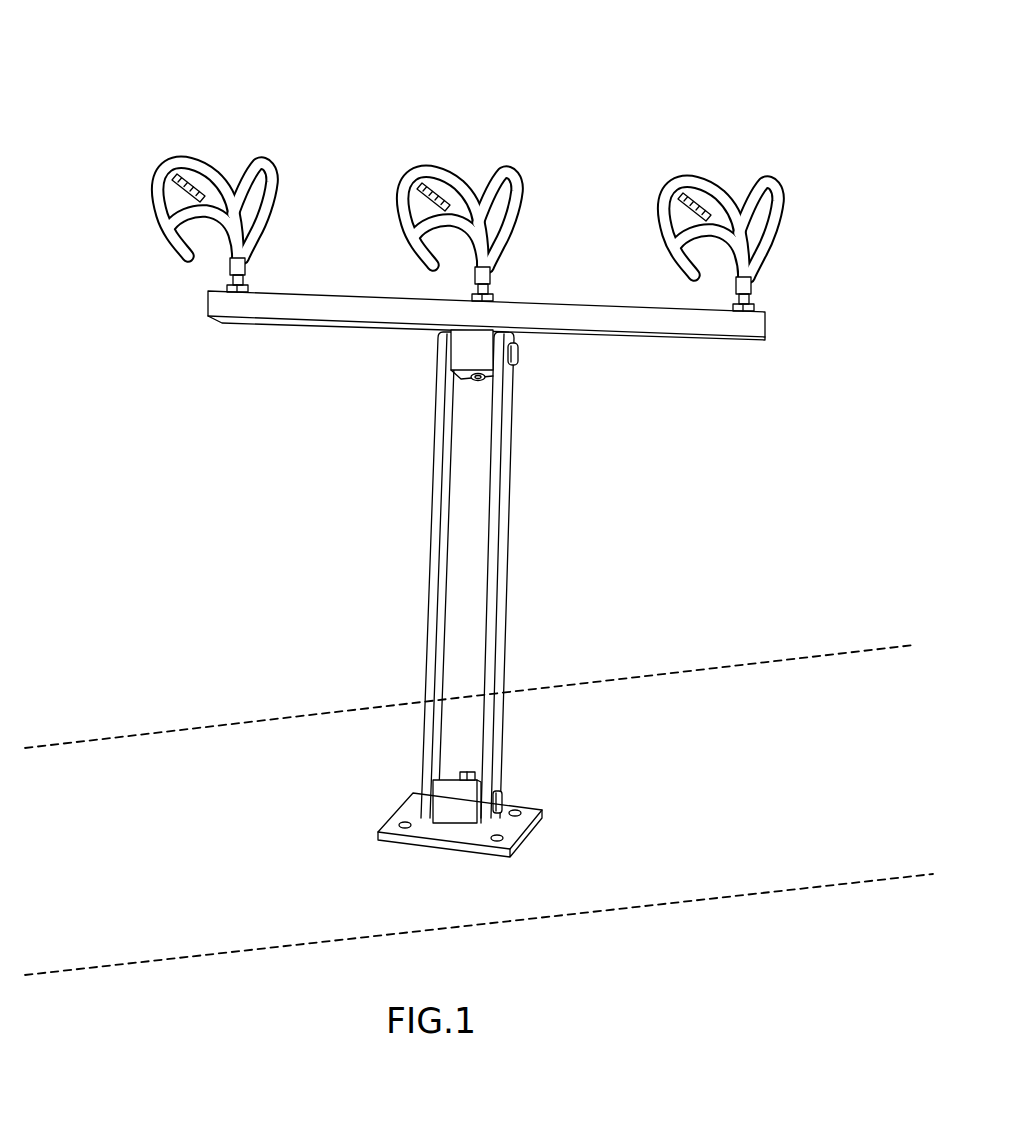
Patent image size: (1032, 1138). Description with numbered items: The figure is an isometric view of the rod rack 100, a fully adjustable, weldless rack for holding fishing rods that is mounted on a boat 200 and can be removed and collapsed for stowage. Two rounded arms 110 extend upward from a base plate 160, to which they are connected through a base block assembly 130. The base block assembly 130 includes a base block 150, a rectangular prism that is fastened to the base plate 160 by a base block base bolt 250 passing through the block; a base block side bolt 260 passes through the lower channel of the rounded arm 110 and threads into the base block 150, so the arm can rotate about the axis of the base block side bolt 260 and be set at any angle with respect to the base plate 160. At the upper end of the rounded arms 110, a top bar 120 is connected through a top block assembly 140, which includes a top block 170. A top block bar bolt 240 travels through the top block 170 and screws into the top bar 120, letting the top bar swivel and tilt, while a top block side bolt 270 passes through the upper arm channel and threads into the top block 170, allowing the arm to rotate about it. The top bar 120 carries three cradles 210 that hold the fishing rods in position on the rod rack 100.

The rod rack 100 is at (188, 110).
The rounded arm 110 is at (435, 545).
The top bar 120 is at (675, 332).
The base block assembly 130 is at (395, 789).
The top block assembly 140 is at (421, 349).
The base block 150 is at (465, 793).
The base plate 160 is at (388, 820).
The top block 170 is at (462, 351).
The boat 200 is at (713, 776).
The cradle 210 is at (259, 174).
The top block bar bolt 240 is at (483, 377).
The base block base bolt 250 is at (463, 774).
The base block side bolt 260 is at (501, 800).
The top block side bolt 270 is at (516, 353).